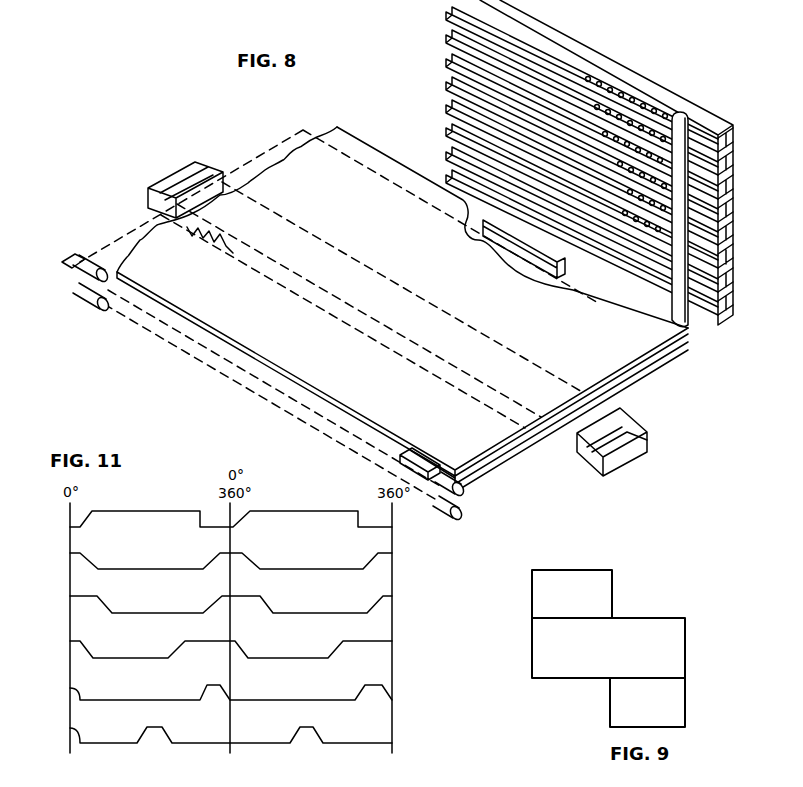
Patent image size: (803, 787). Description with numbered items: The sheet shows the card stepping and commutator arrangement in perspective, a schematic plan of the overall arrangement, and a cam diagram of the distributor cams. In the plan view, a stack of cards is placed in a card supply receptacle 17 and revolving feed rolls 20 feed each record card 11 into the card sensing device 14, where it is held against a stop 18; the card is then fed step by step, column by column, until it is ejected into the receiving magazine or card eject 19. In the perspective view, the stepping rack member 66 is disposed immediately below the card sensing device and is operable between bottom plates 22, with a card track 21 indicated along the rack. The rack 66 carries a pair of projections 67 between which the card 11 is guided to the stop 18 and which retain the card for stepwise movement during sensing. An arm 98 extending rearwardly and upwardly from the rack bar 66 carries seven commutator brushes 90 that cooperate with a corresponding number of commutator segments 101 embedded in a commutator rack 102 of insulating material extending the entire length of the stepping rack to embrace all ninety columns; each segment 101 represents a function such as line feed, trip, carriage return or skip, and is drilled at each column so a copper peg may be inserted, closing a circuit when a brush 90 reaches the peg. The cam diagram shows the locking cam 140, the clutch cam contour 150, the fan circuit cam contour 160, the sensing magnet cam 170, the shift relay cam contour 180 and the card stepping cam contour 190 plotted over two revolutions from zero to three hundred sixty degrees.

In FIG. 8, the record card 11 is at (540, 460).
In FIG. 9, the card sensing device 14 is at (685, 658).
In FIG. 9, the card supply receptacle 17 is at (685, 700).
In FIG. 8, the stop 18 is at (537, 255).
In FIG. 9, the receiving magazine 19 is at (612, 596).
In FIG. 8, the feed rolls 20 is at (77, 295).
In FIG. 8, the card track 21 is at (507, 450).
In FIG. 8, the bottom plate 22 is at (673, 377).
In FIG. 8, the stepping rack member 66 is at (640, 458).
In FIG. 8, the projections 67 is at (214, 172).
In FIG. 8, the commutator brushes 90 is at (697, 297).
In FIG. 8, the arm 98 is at (688, 325).
In FIG. 8, the commutator segments 101 is at (720, 238).
In FIG. 8, the commutator rack 102 is at (697, 110).
In FIG. 11, the locking cam 140 is at (72, 514).
In FIG. 11, the cam contour 150 is at (72, 558).
In FIG. 11, the cam contour 160 is at (72, 603).
In FIG. 11, the cam 170 is at (72, 648).
In FIG. 11, the shift relay cam contour 180 is at (72, 687).
In FIG. 11, the card stepping cam contour 190 is at (72, 728).